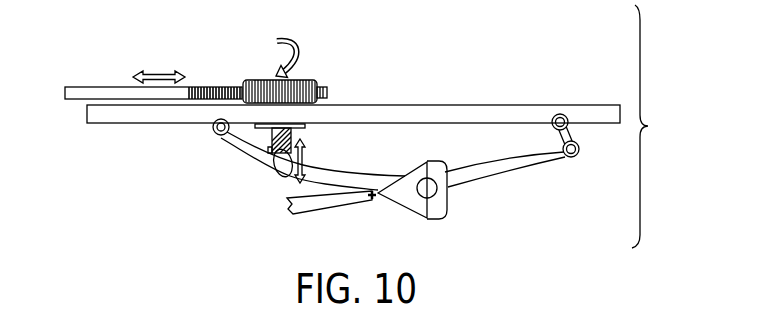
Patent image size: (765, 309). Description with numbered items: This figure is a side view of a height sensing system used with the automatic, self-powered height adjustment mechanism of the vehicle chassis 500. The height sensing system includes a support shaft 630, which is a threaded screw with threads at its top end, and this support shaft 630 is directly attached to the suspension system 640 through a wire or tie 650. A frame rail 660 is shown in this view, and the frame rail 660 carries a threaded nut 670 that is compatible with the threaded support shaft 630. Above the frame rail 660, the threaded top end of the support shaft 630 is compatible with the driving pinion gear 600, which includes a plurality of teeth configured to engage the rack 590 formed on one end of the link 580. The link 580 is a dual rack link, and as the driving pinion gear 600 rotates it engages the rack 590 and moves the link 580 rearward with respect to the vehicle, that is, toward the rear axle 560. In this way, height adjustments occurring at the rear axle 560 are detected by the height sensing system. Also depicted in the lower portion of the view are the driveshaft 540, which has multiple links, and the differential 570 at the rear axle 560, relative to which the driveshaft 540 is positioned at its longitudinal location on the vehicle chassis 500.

The vehicle chassis 500 is at (659, 126).
The driveshaft 540 is at (335, 205).
The rear axle 560 is at (433, 193).
The differential 570 is at (411, 203).
The link 580 is at (78, 90).
The rack 590 is at (212, 86).
The driving pinion gear 600 is at (313, 83).
The support shaft 630 is at (262, 140).
The suspension system 640 is at (513, 170).
The wire or tie 650 is at (273, 172).
The frame rail 660 is at (455, 112).
The threaded nut 670 is at (292, 129).